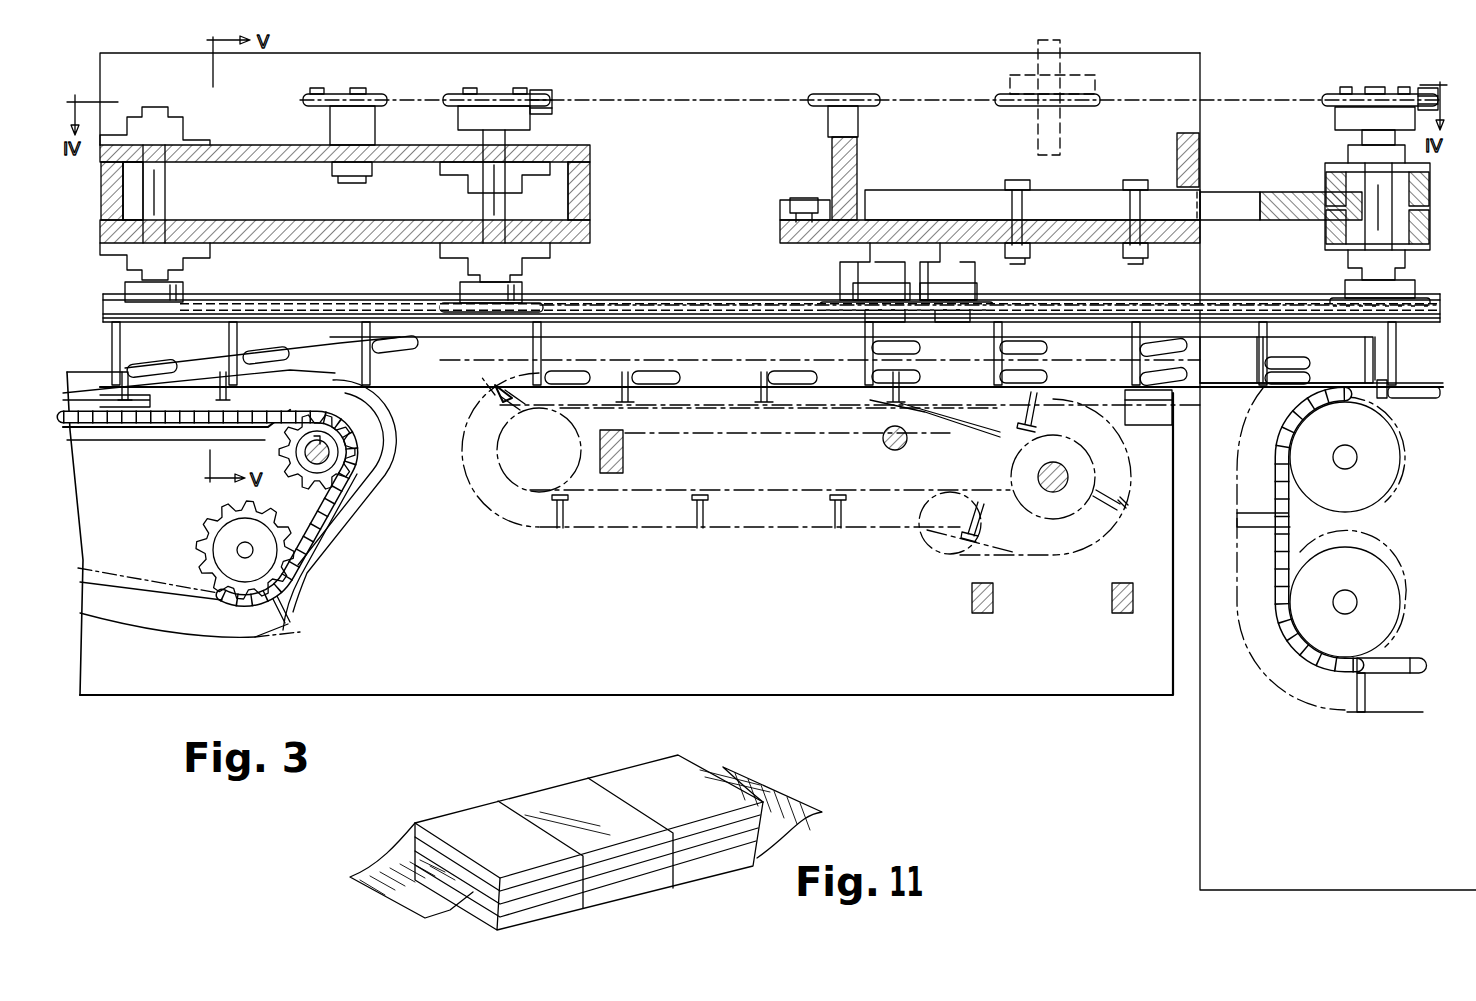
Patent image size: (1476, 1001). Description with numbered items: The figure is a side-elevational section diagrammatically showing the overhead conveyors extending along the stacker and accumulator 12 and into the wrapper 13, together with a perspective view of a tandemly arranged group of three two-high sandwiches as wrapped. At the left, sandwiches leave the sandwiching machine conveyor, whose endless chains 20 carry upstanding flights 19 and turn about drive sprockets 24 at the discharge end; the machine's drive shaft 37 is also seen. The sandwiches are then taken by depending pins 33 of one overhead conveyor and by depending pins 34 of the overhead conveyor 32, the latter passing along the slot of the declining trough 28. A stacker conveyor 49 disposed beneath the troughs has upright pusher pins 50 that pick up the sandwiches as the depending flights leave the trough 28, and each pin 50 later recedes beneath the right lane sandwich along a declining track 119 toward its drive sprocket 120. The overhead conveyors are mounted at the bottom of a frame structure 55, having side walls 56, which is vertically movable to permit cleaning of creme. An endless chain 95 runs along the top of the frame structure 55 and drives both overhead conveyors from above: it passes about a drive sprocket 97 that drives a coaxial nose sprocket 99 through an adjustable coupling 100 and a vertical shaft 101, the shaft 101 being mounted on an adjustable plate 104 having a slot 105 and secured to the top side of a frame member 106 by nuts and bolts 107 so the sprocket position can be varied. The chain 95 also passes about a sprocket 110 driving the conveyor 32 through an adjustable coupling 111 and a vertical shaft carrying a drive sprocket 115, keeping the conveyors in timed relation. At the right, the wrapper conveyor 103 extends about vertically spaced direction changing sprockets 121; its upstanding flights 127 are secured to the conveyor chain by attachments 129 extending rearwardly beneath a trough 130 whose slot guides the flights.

The stacker and accumulator 12 is at (1078, 705).
The wrapper 13 is at (1195, 810).
The flights 19 is at (330, 385).
The endless chains 20 is at (320, 535).
The drive sprockets 24 is at (278, 525).
The trough 28 is at (208, 362).
The overhead conveyor 32 is at (330, 292).
The depending pins 33 is at (1100, 330).
The depending pins 34 is at (108, 348).
The drive shaft 37 is at (292, 455).
The stacker conveyor 49 is at (768, 550).
The upright pusher pins 50 is at (697, 518).
The frame structure 55 is at (710, 171).
The side walls 56 is at (1200, 72).
The endless chain 95 is at (548, 96).
The drive sprocket 97 is at (1338, 118).
The nose sprocket 99 is at (1345, 295).
The adjustable coupling 100 is at (1348, 86).
The vertical shaft 101 is at (1360, 137).
The wrapper conveyor 103 is at (1291, 674).
The adjustable plate 104 is at (1296, 192).
The slot 105 is at (1080, 198).
The frame member 106 is at (918, 218).
The nuts and bolts 107 is at (1015, 180).
The sprocket 110 is at (535, 108).
The adjustable coupling 111 is at (518, 90).
The drive sprocket 115 is at (468, 290).
The declining track 119 is at (940, 405).
The drive sprocket 120 is at (1008, 506).
The direction changing sprockets 121 is at (1392, 468).
The upstanding flights 127 is at (1250, 528).
The attachments 129 is at (1286, 548).
The trough 130 is at (1440, 398).